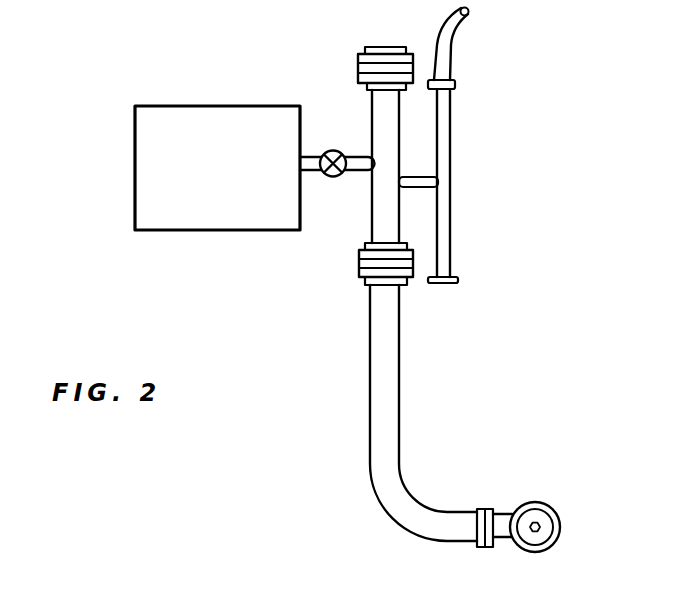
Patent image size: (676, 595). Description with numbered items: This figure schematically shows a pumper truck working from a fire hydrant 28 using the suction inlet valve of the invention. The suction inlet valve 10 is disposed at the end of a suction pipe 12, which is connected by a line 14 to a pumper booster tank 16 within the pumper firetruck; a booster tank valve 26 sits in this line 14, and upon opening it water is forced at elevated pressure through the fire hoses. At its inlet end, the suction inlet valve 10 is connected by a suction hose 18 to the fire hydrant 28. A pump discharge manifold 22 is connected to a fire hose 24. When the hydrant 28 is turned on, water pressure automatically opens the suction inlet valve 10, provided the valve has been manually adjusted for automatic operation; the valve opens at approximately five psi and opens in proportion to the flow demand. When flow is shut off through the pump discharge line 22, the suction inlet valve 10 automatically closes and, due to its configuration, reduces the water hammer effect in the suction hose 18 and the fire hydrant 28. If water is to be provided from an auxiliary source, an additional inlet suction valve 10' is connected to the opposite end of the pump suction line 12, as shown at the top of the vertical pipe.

The suction inlet valve 10 is at (342, 275).
The additional inlet suction valve 10' is at (346, 67).
The suction pipe 12 is at (372, 222).
The line 14 is at (358, 170).
The pumper booster tank 16 is at (178, 107).
The suction hose 18 is at (392, 340).
The pump discharge manifold 22 is at (452, 148).
The fire hose 24 is at (458, 37).
The booster tank valve 26 is at (337, 149).
The fire hydrant 28 is at (546, 506).